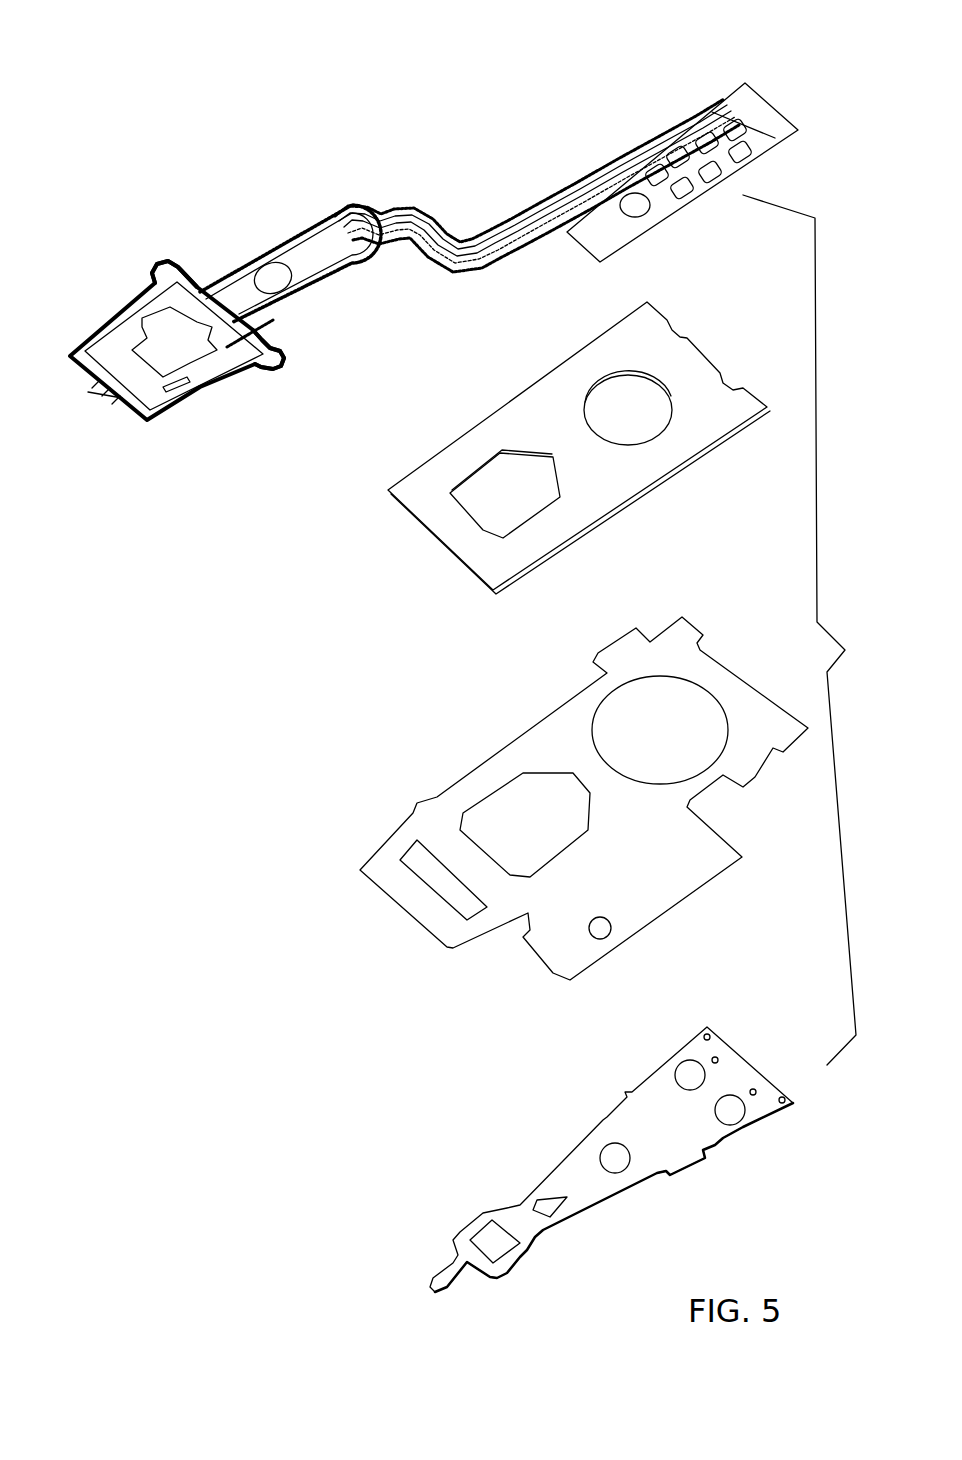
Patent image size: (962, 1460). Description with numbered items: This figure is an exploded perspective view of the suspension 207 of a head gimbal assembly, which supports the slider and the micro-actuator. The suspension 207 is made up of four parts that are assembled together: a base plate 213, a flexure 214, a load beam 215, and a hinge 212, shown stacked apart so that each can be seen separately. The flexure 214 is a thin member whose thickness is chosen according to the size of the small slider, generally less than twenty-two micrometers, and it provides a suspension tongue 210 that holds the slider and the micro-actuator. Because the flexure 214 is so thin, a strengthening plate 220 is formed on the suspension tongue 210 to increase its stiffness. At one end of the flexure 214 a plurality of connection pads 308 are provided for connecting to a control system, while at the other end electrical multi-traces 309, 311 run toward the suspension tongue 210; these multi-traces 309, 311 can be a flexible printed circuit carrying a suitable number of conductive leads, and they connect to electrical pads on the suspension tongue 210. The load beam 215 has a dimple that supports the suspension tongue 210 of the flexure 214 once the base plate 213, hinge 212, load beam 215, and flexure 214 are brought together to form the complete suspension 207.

The suspension 207 is at (831, 630).
The flexure 214 is at (408, 192).
The connection pads 308 is at (727, 143).
The electrical multi-trace 311 is at (347, 260).
The strengthening plate 220 is at (155, 353).
The electrical multi-trace 309 is at (158, 263).
The suspension tongue 210 is at (207, 310).
The base plate 213 is at (440, 517).
The hinge 212 is at (438, 798).
The load beam 215 is at (585, 1164).